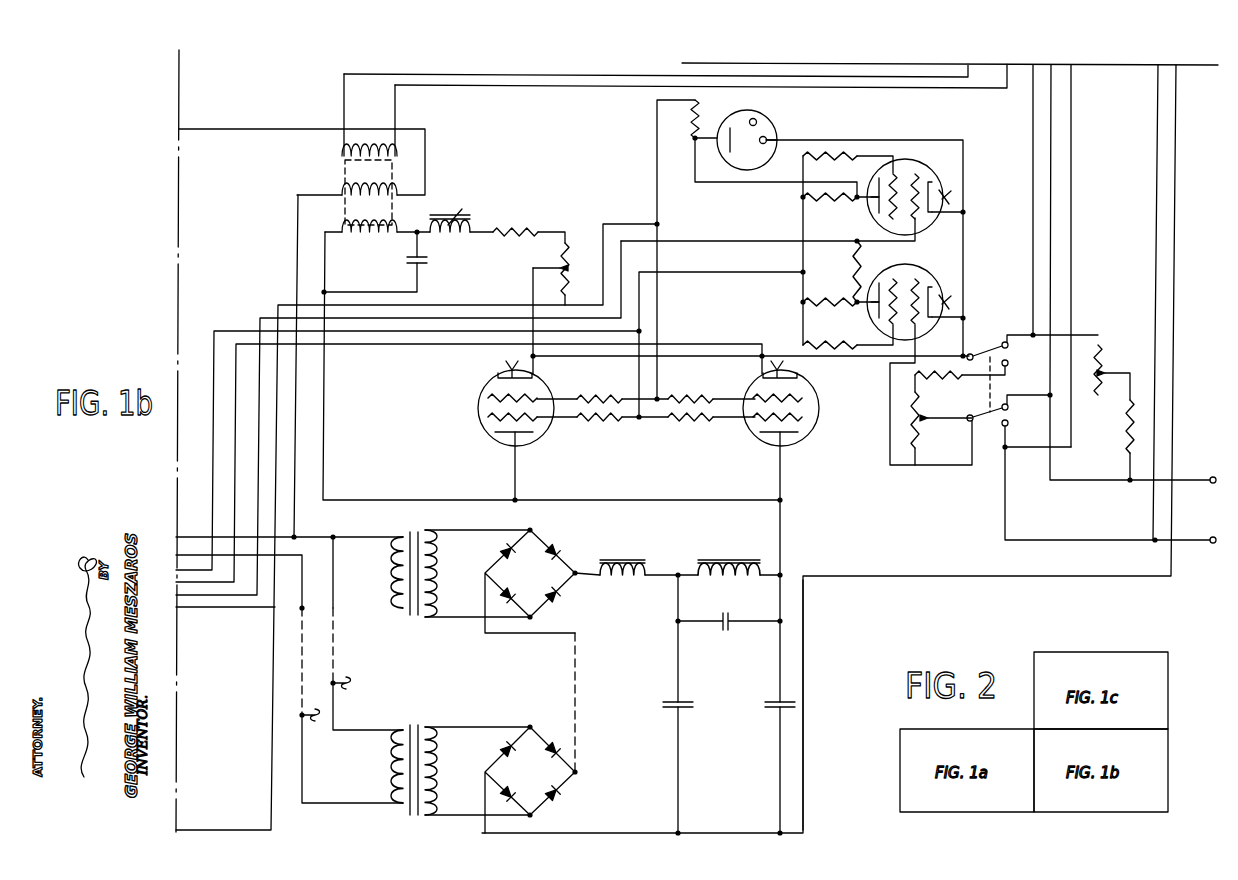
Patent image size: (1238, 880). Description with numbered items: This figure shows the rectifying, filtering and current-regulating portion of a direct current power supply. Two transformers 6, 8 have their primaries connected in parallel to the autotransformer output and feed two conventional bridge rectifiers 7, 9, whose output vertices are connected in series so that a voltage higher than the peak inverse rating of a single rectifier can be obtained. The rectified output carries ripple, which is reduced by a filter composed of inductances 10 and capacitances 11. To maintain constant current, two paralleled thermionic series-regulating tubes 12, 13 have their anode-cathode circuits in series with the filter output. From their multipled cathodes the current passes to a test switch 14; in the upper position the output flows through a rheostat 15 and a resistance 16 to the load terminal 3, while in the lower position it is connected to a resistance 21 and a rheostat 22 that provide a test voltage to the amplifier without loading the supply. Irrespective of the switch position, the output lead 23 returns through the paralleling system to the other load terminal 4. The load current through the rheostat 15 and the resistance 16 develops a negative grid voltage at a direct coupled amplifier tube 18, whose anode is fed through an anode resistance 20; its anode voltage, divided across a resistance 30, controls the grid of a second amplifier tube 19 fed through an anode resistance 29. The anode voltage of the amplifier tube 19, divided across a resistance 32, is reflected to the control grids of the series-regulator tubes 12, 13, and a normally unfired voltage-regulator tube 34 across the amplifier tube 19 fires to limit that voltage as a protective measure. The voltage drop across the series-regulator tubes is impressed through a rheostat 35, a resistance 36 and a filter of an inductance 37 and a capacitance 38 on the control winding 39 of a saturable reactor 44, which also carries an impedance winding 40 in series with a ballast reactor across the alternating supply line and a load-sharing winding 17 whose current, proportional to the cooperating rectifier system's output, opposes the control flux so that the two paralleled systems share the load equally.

The load terminal 3 is at (1220, 481).
The load terminal 4 is at (1220, 541).
The transformer 6 is at (410, 618).
The rectifier 7 is at (560, 565).
The transformer 8 is at (418, 726).
The rectifier 9 is at (531, 743).
The inductance 10 is at (698, 562).
The capacitance 11 is at (764, 700).
The series-regulating tube 12 is at (546, 429).
The series-regulating tube 13 is at (807, 431).
The switch 14 is at (991, 420).
The rheostat 15 is at (1103, 351).
The resistance 16 is at (1125, 445).
The load-sharing winding 17 is at (386, 148).
The amplifier tube 18 is at (926, 271).
The amplifier tube 19 is at (916, 168).
The anode resistance 20 is at (830, 300).
The resistance 21 is at (945, 379).
The rheostat 22 is at (919, 409).
The output lead 23 is at (804, 681).
The anode resistance 29 is at (832, 203).
The resistance 30 is at (861, 256).
The resistance 32 is at (701, 118).
The voltage-regulator tube 34 is at (773, 128).
The rheostat 35 is at (568, 265).
The resistance 36 is at (521, 230).
The inductance 37 is at (455, 215).
The capacitance 38 is at (428, 262).
The control winding 39 is at (355, 231).
The impedance winding 40 is at (383, 194).
The saturable reactor 44 is at (345, 167).